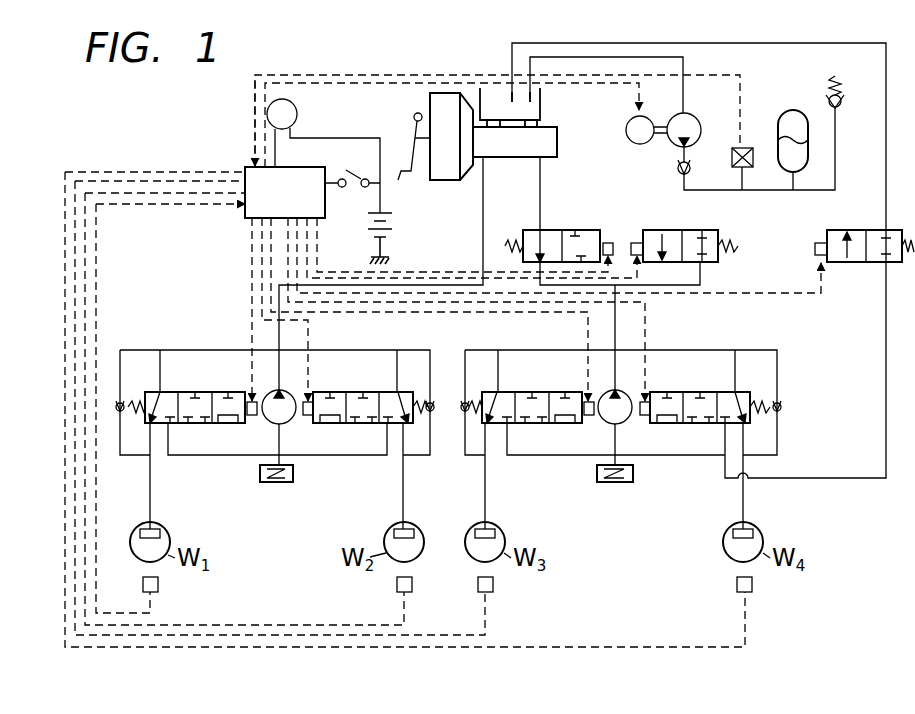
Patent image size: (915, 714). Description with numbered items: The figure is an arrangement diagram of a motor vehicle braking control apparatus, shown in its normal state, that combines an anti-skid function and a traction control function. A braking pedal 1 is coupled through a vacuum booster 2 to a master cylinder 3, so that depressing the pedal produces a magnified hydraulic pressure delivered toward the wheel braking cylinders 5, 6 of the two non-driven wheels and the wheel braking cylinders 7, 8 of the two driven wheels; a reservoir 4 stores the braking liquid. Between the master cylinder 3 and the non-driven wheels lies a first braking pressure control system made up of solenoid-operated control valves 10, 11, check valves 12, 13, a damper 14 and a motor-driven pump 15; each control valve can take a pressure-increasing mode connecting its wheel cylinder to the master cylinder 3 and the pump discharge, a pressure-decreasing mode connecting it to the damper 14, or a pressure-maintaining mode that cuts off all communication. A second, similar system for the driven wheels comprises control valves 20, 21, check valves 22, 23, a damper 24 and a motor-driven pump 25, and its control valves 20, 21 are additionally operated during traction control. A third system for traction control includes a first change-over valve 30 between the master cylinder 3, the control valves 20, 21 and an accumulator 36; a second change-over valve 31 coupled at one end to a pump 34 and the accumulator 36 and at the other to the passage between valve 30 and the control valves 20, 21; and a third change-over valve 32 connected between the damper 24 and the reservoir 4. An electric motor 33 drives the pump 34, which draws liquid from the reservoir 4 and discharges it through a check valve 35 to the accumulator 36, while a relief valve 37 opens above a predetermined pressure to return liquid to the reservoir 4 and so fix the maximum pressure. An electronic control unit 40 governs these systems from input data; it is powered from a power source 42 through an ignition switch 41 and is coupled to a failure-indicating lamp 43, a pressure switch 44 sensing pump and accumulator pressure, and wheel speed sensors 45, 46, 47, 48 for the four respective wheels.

The braking pedal 1 is at (406, 132).
The vacuum booster 2 is at (445, 168).
The master cylinder 3 is at (561, 140).
The reservoir 4 is at (494, 100).
The wheel braking cylinder 5 is at (163, 529).
The wheel braking cylinder 6 is at (407, 529).
The wheel braking cylinder 7 is at (489, 529).
The wheel braking cylinder 8 is at (758, 529).
The solenoid-operated control valve 10 is at (188, 392).
The solenoid-operated control valve 11 is at (343, 392).
The check valve 12 is at (127, 395).
The check valve 13 is at (437, 398).
The damper 14 is at (294, 476).
The motor-driven pump 15 is at (287, 424).
The solenoid-operated control valve 20 is at (521, 392).
The solenoid-operated control valve 21 is at (674, 392).
The check valve 22 is at (461, 421).
The check valve 23 is at (784, 407).
The damper 24 is at (636, 476).
The motor-driven pump 25 is at (621, 425).
The first change-over valve 30 is at (565, 229).
The second change-over valve 31 is at (668, 229).
The third change-over valve 32 is at (862, 229).
The electric motor 33 is at (626, 132).
The motor-driven pump 34 is at (692, 118).
The check valve 35 is at (677, 169).
The accumulator 36 is at (791, 112).
The relief valve 37 is at (839, 118).
The electronic control unit 40 is at (272, 205).
The ignition switch 41 is at (354, 183).
The power source 42 is at (395, 222).
The lamp 43 is at (300, 116).
The pressure switch 44 is at (744, 147).
The wheel speed sensor 45 is at (160, 586).
The wheel speed sensor 46 is at (397, 585).
The wheel speed sensor 47 is at (494, 586).
The wheel speed sensor 48 is at (754, 586).